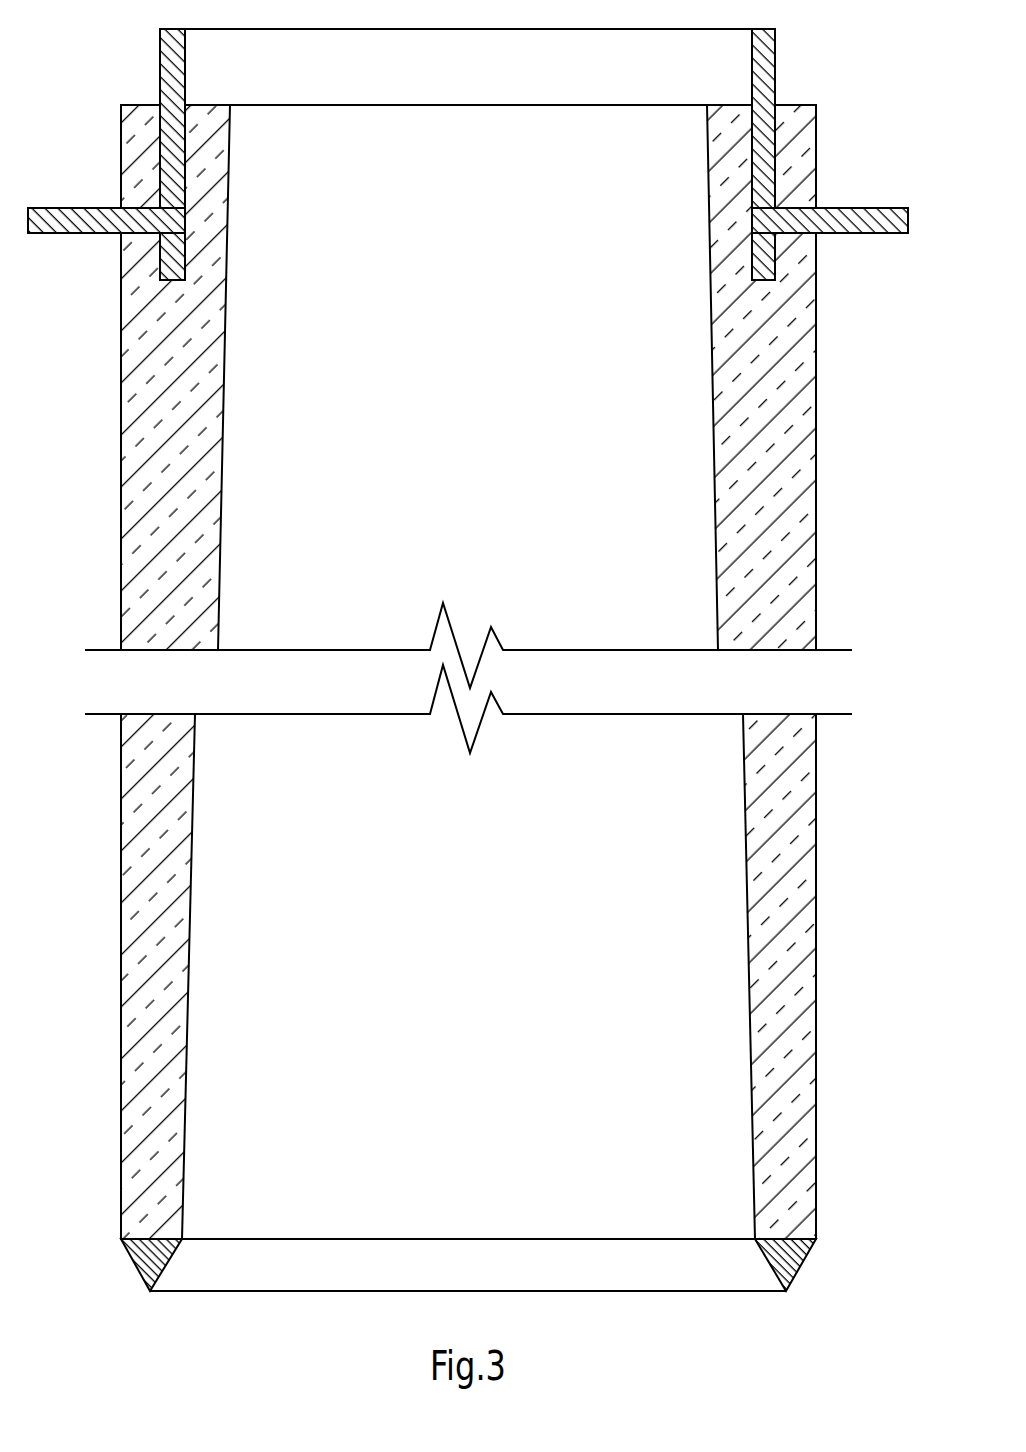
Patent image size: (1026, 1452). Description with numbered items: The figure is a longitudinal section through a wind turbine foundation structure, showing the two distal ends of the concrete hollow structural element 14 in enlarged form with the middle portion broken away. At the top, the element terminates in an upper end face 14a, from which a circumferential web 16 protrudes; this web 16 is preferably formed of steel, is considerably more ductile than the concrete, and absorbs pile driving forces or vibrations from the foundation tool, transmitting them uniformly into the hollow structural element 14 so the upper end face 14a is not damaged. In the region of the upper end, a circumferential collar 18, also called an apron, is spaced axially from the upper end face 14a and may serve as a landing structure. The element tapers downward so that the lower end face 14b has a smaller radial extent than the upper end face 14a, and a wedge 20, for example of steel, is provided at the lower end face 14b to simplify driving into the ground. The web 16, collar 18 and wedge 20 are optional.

The hollow structural element 14 is at (858, 467).
The upper end face 14a is at (134, 86).
The lower end face 14b is at (214, 1266).
The circumferential web 16 is at (762, 54).
The circumferential collar 18 is at (878, 222).
The wedge 20 is at (148, 1265).